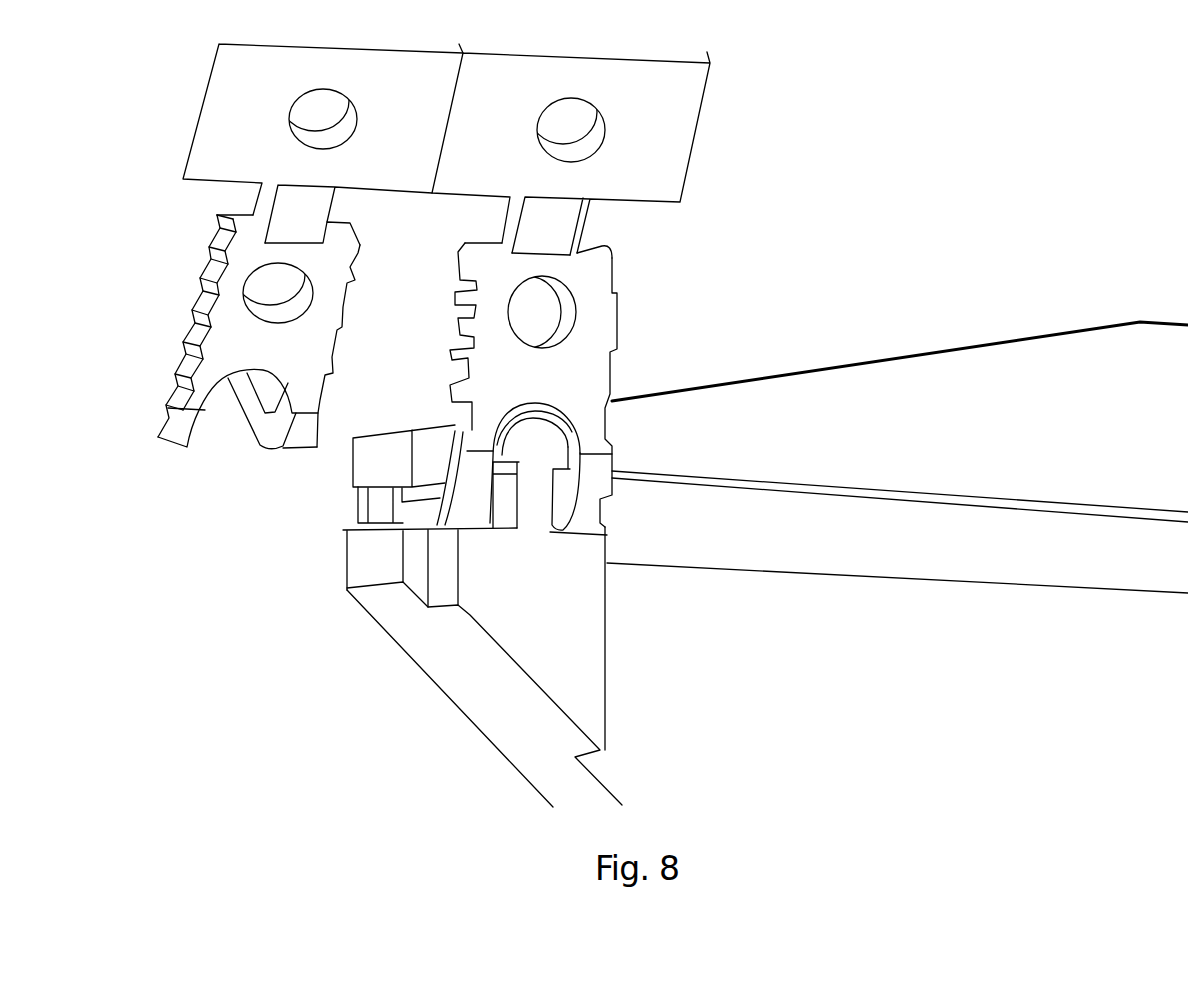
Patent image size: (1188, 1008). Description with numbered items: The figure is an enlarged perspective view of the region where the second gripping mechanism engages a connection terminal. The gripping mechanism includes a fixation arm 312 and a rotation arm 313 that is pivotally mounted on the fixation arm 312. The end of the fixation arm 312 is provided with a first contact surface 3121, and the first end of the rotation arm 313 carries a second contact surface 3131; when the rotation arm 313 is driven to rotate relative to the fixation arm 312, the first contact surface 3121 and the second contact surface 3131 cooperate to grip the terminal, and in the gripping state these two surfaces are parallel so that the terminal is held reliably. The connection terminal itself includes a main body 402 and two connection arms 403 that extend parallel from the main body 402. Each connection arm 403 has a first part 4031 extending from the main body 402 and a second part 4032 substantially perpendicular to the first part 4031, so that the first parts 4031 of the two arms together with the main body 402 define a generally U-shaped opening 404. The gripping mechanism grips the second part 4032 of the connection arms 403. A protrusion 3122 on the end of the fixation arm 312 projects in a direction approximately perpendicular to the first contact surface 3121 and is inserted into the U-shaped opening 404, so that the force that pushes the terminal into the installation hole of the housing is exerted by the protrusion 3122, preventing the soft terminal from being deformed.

The main body 402 is at (603, 331).
The connection arm 403 is at (163, 408).
The U-shaped opening 404 is at (240, 428).
The first part 4031 is at (590, 494).
The second part 4032 is at (418, 512).
The fixation arm 312 is at (969, 568).
The rotation arm 313 is at (963, 371).
The first contact surface 3121 is at (398, 532).
The protrusion 3122 is at (520, 448).
The second contact surface 3131 is at (358, 488).